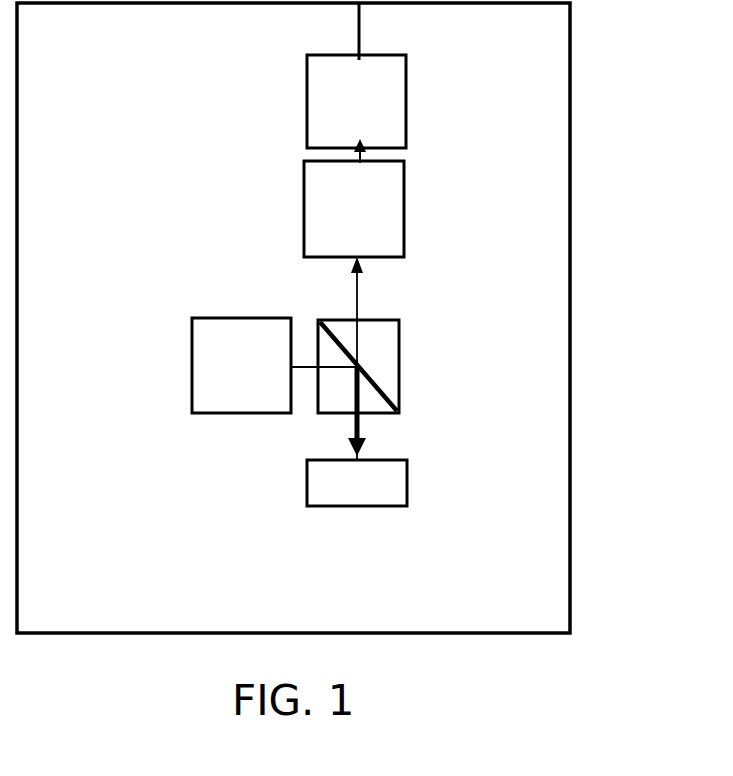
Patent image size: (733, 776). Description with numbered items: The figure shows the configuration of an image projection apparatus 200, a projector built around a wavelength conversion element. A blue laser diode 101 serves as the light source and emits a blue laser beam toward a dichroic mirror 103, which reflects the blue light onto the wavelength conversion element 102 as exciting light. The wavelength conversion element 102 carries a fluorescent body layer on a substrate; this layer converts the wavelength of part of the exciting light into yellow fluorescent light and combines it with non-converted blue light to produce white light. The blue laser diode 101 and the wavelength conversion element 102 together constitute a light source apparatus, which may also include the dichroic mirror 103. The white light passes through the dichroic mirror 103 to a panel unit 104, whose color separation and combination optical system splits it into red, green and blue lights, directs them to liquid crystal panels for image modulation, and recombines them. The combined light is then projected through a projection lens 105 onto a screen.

The image projection apparatus 200 is at (512, 636).
The blue laser diode 101 is at (198, 344).
The wavelength conversion element 102 is at (387, 489).
The dichroic mirror 103 is at (388, 367).
The panel unit 104 is at (389, 224).
The projection lens 105 is at (388, 98).